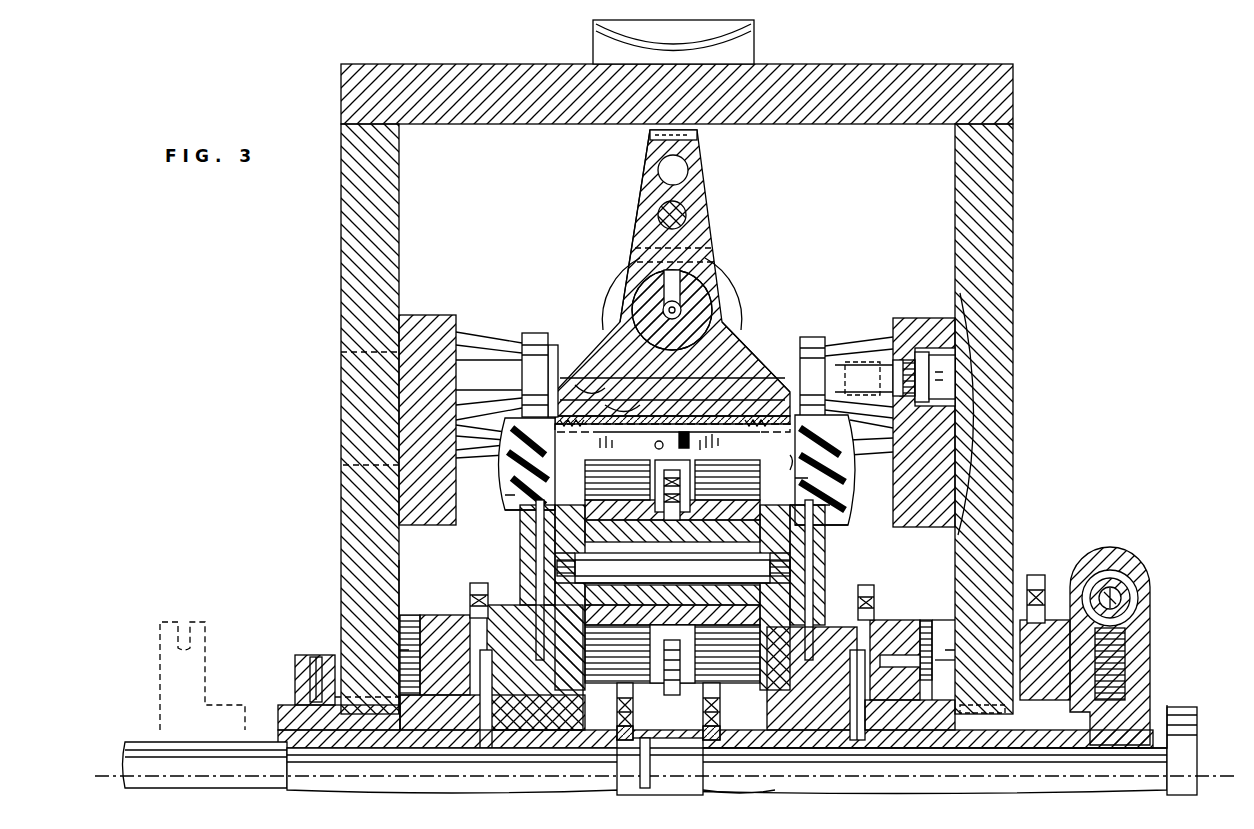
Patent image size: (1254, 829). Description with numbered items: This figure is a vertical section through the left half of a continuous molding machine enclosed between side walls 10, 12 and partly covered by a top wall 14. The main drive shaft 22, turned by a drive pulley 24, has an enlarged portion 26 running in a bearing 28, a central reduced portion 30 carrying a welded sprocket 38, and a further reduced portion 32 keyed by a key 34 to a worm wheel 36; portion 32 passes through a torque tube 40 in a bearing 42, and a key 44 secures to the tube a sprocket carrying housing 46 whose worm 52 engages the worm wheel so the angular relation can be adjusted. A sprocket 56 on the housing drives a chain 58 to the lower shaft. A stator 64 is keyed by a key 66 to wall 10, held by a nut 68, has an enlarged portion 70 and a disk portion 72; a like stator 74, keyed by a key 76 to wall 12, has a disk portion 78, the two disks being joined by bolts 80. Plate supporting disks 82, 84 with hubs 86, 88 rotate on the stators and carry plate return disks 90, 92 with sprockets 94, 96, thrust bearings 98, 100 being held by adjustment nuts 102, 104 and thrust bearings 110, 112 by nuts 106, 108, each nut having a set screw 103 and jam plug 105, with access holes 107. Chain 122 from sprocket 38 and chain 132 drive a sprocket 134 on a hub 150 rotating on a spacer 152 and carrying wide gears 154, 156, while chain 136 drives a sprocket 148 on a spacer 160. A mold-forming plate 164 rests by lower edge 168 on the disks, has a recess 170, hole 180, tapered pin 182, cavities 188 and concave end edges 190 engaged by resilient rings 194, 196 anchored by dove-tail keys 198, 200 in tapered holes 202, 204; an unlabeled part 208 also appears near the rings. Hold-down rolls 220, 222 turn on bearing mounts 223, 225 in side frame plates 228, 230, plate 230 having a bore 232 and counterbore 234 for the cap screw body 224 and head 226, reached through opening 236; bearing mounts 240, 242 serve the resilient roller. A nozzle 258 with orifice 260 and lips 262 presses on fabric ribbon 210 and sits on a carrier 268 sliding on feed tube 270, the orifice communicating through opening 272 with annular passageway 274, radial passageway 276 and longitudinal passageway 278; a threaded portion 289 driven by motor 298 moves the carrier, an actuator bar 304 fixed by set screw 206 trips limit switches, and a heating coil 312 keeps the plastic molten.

The side wall 10 is at (348, 178).
The side wall 12 is at (1000, 207).
The top wall 14 is at (848, 72).
The main drive shaft 22 is at (150, 745).
The drive pulley 24 is at (212, 660).
The portion of enlarged diameter 26 is at (300, 725).
The bearing 28 is at (340, 740).
The portion of reduced diameter 30 is at (650, 740).
The portion of further reduced diameter 32 is at (810, 770).
The key 34 is at (1152, 715).
The worm wheel 36 is at (1128, 640).
The sprocket 38 is at (622, 700).
The torque tube 40 is at (830, 740).
The bearing 42 is at (940, 660).
The key 44 is at (1085, 748).
The sprocket carrying housing 46 is at (1108, 548).
The worm 52 is at (1138, 585).
The sprocket 56 is at (1035, 575).
The chain 58 is at (1040, 620).
The stator 64 is at (399, 690).
The key 66 is at (330, 655).
The nut 68 is at (300, 665).
The portion of enlarged diameter 70 is at (418, 735).
The disk portion 72 is at (560, 580).
The stator 74 is at (895, 700).
The key 76 is at (985, 700).
The disk portion 78 is at (820, 585).
The bolts 80 is at (580, 568).
The plate supporting disk 82 is at (560, 525).
The plate supporting disk 84 is at (840, 520).
The hub 86 is at (545, 675).
The hub 88 is at (825, 680).
The plate return disk 90 is at (545, 525).
The plate return disk 92 is at (830, 525).
The sprocket 94 is at (478, 585).
The sprocket 96 is at (870, 620).
The thrust bearing 98 is at (480, 630).
The thrust bearing 100 is at (885, 625).
The adjustment nut 102 is at (400, 620).
The set screw 103 is at (400, 650).
The adjustment nut 104 is at (932, 600).
The jam plug 105 is at (435, 670).
The adjustment nut 106 is at (415, 630).
The access holes 107 is at (445, 620).
The adjustment nut 108 is at (940, 612).
The thrust bearing 110 is at (490, 680).
The thrust bearing 112 is at (858, 655).
The chain 122 is at (620, 725).
The chain 132 is at (672, 690).
The sprocket 134 is at (672, 568).
The chain 136 is at (735, 708).
The sprocket 148 is at (722, 700).
The hub 150 is at (625, 568).
The spacer 152 is at (700, 550).
The gear 154 is at (615, 468).
The gear 156 is at (728, 478).
The spacer 160 is at (795, 500).
The mold-forming plate 164 is at (660, 430).
The lower edge 168 is at (540, 508).
The recess 170 is at (790, 470).
The slot or hole 180 is at (684, 433).
The tapered pin 182 is at (655, 445).
The cavities 188 is at (755, 440).
The concave end edges 190 is at (540, 455).
The resilient ring 194 is at (525, 420).
The resilient ring 196 is at (840, 500).
The dove-tail keys 198 is at (512, 468).
The dove-tail keys 200 is at (838, 480).
The reversely tapered holes 202 is at (515, 428).
The reversely tapered holes 204 is at (860, 425).
The set screw 206 is at (690, 142).
The ring 208 is at (510, 495).
The fabric ribbon 210 is at (615, 405).
The hold-down roll 220 is at (535, 330).
The hold-down roll 222 is at (812, 335).
The bearing mount 223 is at (475, 340).
The body 224 is at (898, 370).
The bearing mount 225 is at (838, 345).
The head 226 is at (945, 395).
The side frame plate 228 is at (422, 320).
The side frame plate 230 is at (905, 320).
The bore 232 is at (915, 345).
The counterbore 234 is at (938, 348).
The opening 236 is at (341, 352).
The bearing mount 240 is at (478, 446).
The bearing mount 242 is at (865, 460).
The nozzle 258 is at (560, 340).
The orifice 260 is at (590, 395).
The lips 262 is at (578, 360).
The carrier 268 is at (742, 325).
The feed tube 270 is at (652, 312).
The opening 272 is at (700, 345).
The annular passageway 274 is at (728, 275).
The radial passageway 276 is at (630, 272).
The longitudinally extending passageway 278 is at (718, 318).
The threaded portion 289 is at (690, 210).
The motor 298 is at (757, 46).
The actuator bar 304 is at (660, 143).
The heating coil 312 is at (608, 300).